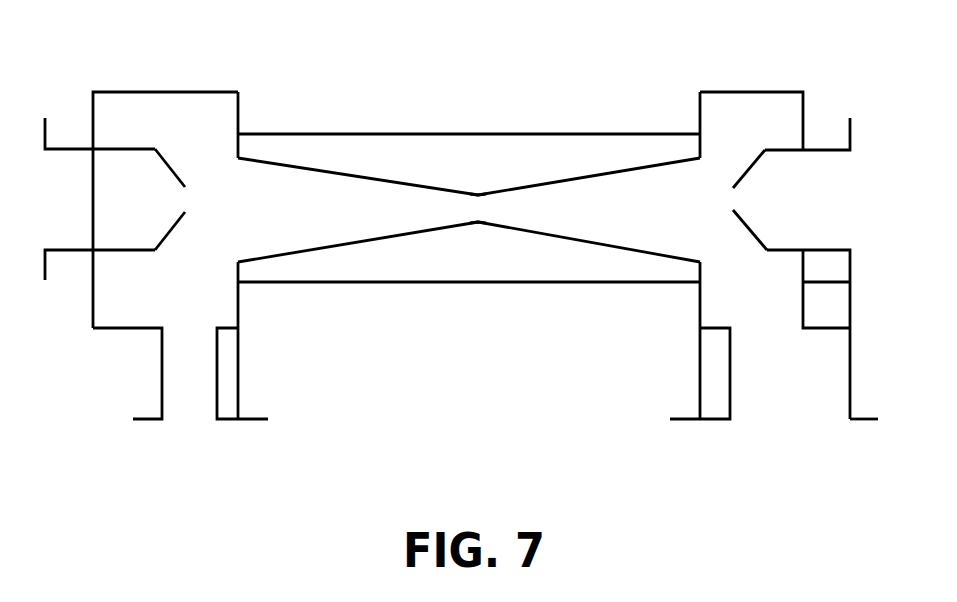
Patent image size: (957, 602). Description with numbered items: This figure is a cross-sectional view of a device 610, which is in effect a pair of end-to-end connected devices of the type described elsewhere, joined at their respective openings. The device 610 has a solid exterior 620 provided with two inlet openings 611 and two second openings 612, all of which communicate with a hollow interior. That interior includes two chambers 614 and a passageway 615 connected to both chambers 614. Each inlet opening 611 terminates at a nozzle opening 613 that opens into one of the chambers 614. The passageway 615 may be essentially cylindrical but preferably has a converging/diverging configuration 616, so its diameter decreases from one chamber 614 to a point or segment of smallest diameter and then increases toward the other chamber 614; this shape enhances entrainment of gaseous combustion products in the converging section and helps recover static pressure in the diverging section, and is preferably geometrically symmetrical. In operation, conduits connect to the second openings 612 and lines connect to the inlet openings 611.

The device 610 is at (465, 110).
The inlet openings 611 is at (447, 268).
The second openings 612 is at (485, 353).
The nozzle openings 613 is at (189, 200).
The chambers 614 is at (461, 242).
The passageway 615 is at (469, 210).
The converging/diverging configuration 616 is at (479, 208).
The solid exterior 620 is at (272, 134).